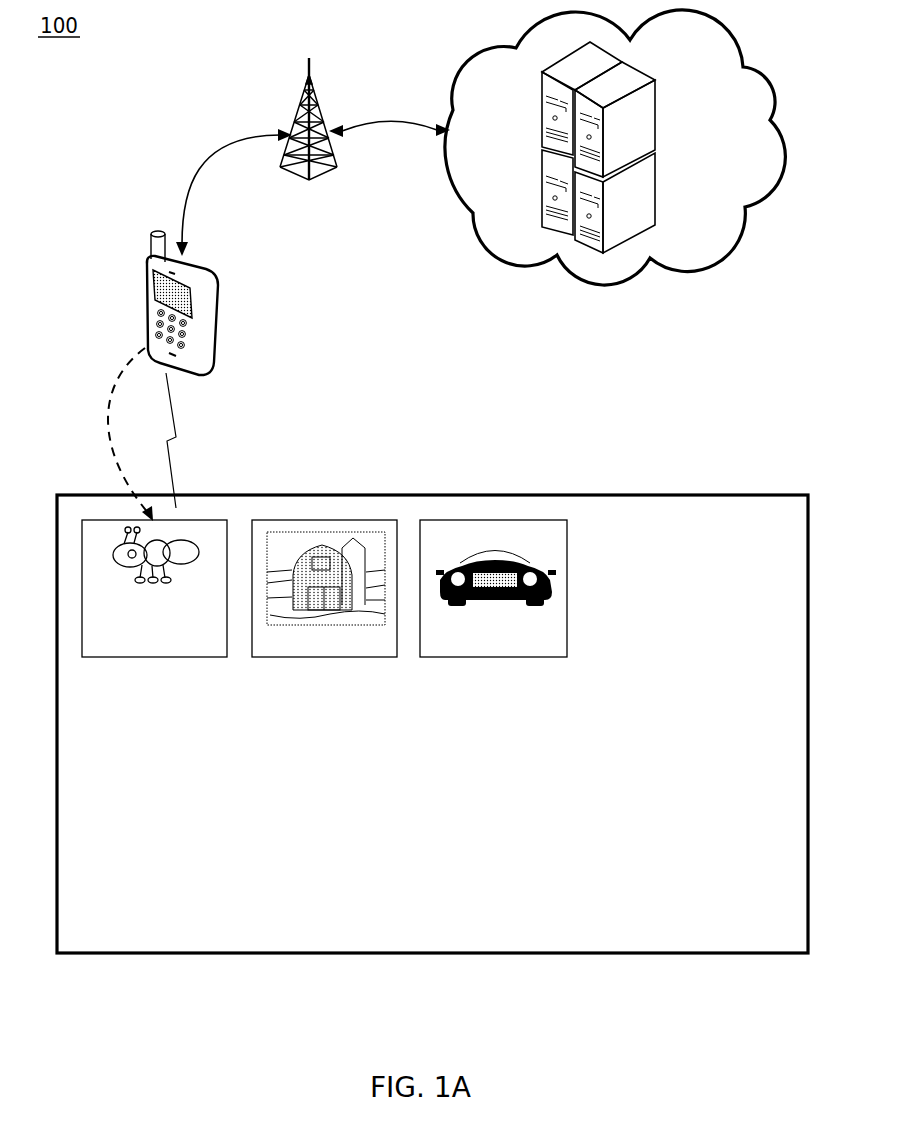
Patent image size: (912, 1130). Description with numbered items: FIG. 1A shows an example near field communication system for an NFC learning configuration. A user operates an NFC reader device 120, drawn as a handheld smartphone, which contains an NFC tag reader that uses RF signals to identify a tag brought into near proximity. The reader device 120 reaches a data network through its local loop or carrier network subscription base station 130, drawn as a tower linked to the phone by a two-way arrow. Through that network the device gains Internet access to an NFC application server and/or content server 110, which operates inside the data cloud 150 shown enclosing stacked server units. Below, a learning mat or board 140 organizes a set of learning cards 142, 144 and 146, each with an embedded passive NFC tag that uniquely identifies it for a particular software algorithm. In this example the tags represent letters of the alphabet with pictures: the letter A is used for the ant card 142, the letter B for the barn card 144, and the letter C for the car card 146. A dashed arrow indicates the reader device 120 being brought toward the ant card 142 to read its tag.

The NFC application server and/or content server 110 is at (657, 110).
The NFC reader device 120 is at (220, 317).
The carrier network subscription base station 130 is at (312, 74).
The learning mat or board 140 is at (755, 494).
The learning card (ant) 142 is at (170, 658).
The learning card (barn) 144 is at (342, 658).
The learning card (car) 146 is at (513, 658).
The data cloud 150 is at (700, 268).